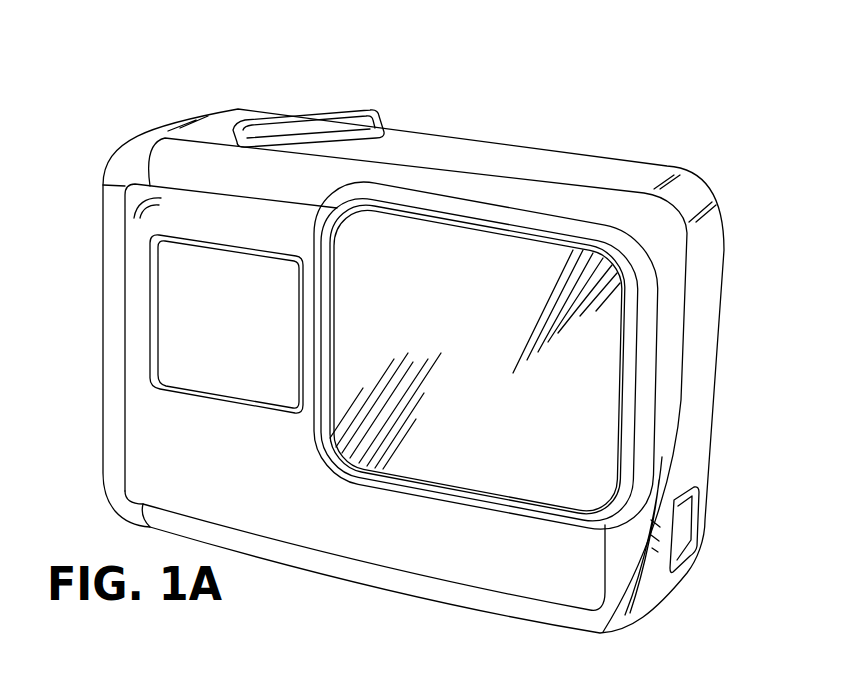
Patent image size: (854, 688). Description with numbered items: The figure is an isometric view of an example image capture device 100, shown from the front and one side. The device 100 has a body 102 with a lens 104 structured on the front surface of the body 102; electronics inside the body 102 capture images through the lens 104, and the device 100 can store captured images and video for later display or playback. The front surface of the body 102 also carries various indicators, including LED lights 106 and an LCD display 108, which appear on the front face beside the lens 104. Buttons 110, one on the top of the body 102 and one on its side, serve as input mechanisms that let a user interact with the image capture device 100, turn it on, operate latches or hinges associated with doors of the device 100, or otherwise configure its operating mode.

The image capture device 100 is at (756, 166).
The body 102 is at (668, 160).
The lens 104 is at (592, 392).
The LED lights 106 is at (134, 197).
The LCD display 108 is at (185, 357).
The buttons 110 is at (300, 117).